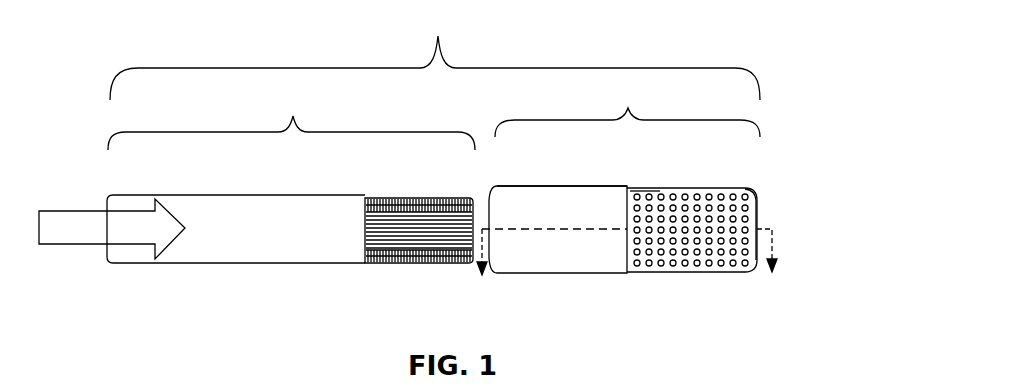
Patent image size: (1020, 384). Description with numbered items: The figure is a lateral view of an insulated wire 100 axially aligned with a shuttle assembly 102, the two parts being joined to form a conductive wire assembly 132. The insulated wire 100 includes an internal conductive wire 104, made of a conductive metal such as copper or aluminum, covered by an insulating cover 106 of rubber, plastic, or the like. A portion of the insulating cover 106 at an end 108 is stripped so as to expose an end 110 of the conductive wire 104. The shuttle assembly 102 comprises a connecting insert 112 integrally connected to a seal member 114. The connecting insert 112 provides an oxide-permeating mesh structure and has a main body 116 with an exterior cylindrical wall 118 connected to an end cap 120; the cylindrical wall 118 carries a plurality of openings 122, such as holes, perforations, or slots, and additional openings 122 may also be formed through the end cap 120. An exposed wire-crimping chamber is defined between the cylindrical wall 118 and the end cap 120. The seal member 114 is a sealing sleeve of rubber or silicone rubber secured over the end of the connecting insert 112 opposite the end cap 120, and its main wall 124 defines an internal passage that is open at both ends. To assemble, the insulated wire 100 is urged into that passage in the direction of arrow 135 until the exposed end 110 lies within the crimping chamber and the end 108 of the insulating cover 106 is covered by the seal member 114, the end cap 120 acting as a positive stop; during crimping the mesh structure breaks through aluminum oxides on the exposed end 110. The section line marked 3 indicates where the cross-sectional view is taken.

The conductive wire assembly 132 is at (435, 52).
The insulated wire 100 is at (291, 118).
The shuttle assembly 102 is at (627, 107).
The arrow 135 is at (66, 246).
The insulating cover 106 is at (221, 263).
The conductive wire 104 is at (419, 238).
The end 108 is at (370, 198).
The end 110 is at (433, 198).
The seal member 114 is at (554, 232).
The main wall 124 is at (556, 186).
The connecting insert 112 is at (735, 236).
The main body 116 is at (708, 273).
The cylindrical wall 118 is at (664, 190).
The openings 122 is at (758, 194).
The end cap 120 is at (760, 218).
The section line 3- 3 is at (627, 269).